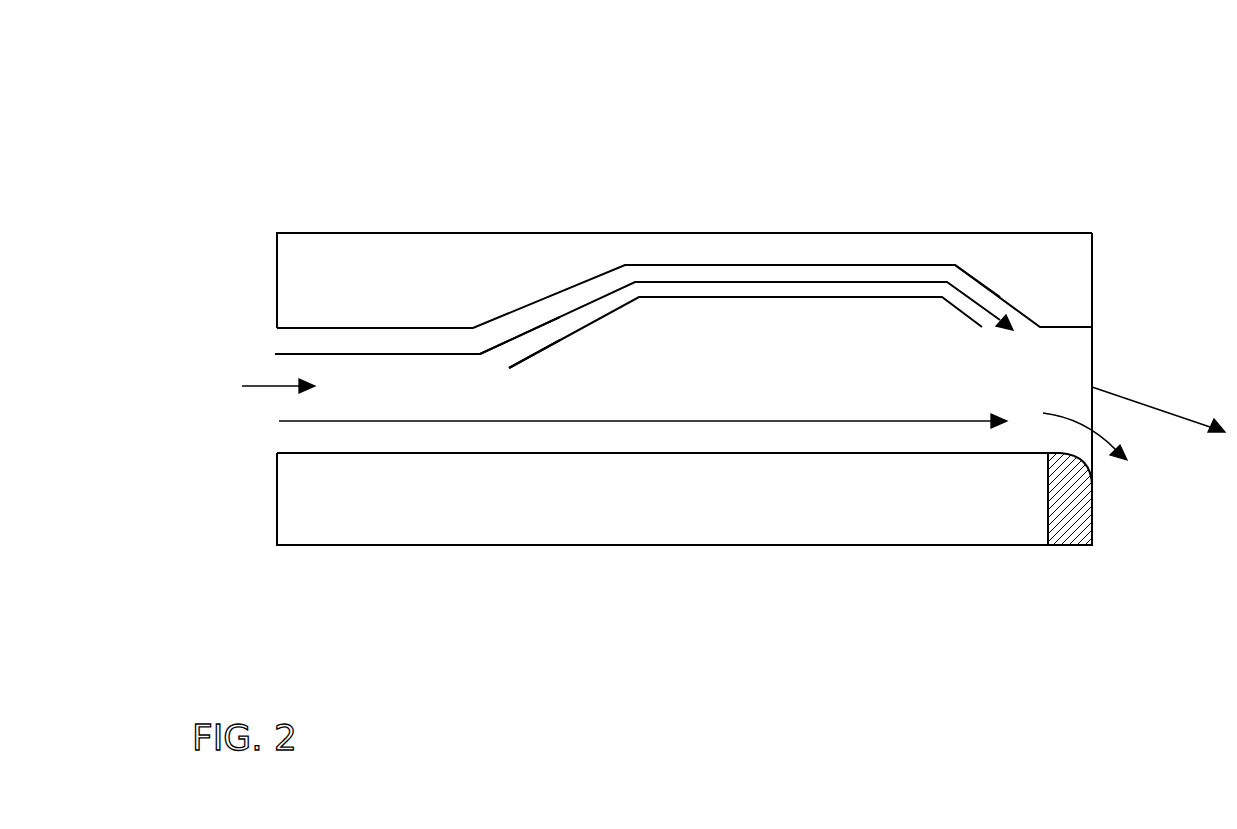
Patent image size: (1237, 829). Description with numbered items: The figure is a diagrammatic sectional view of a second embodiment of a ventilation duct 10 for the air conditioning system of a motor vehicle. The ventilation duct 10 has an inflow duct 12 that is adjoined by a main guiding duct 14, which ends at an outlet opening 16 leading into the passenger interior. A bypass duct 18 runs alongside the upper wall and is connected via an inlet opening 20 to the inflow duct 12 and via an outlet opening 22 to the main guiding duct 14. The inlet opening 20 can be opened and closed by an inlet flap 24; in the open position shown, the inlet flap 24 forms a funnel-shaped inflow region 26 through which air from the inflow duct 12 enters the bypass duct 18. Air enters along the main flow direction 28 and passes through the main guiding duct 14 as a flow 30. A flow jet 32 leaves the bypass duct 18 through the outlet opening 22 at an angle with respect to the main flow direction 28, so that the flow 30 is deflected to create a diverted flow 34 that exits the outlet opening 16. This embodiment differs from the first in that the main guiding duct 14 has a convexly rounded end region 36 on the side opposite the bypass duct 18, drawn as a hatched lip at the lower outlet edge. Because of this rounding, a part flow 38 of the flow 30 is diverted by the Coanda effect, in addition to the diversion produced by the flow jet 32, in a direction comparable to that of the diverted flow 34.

The ventilation duct 10 is at (360, 130).
The inflow duct 12 is at (277, 213).
The main guiding duct 14 is at (1092, 213).
The outlet opening 16 is at (1093, 346).
The bypass duct 18 is at (807, 291).
The inlet opening 20 is at (488, 333).
The outlet opening 22 is at (1022, 323).
The inlet flap 24 is at (561, 339).
The funnel-shaped inflow region 26 is at (535, 342).
The main flow direction 28 is at (272, 386).
The flow 30 is at (902, 421).
The flow jet 32 is at (977, 303).
The diverted flow 34 is at (1172, 415).
The convexly rounded end region 36 is at (1048, 548).
The part flow 38 is at (1107, 442).